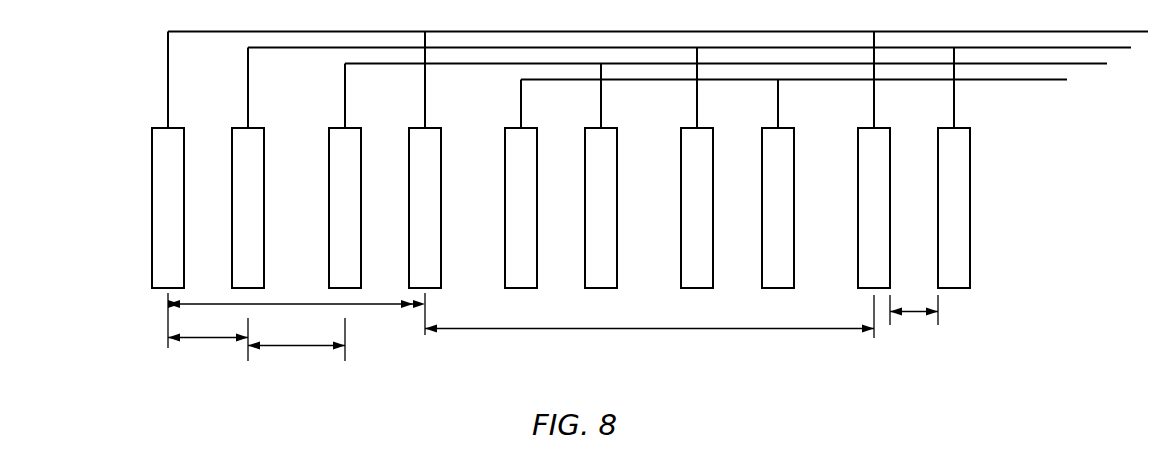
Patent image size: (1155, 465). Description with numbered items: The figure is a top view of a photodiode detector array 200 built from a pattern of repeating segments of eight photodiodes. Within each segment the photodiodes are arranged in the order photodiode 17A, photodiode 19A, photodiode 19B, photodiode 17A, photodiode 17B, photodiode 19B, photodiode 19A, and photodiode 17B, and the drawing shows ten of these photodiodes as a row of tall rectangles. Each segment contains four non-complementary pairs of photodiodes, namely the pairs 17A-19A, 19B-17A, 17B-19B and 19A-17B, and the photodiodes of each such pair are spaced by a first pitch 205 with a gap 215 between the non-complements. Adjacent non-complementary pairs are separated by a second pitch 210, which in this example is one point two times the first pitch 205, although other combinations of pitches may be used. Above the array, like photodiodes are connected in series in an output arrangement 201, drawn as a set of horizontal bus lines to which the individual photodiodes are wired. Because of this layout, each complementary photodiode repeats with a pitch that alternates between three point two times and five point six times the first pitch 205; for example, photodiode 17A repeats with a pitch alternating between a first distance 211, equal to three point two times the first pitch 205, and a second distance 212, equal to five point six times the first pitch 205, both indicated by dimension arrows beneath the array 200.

The photodiode 17A is at (181, 160).
The photodiode 17B is at (534, 200).
The photodiode 19A is at (261, 240).
The photodiode 19B is at (357, 272).
The photodiode detector array 200 is at (123, 172).
The output arrangement 201 is at (140, 87).
The first pitch 205 is at (206, 341).
The second pitch 210 is at (311, 349).
The first distance 211 is at (362, 309).
The second distance 212 is at (758, 333).
The gap 215 is at (909, 318).